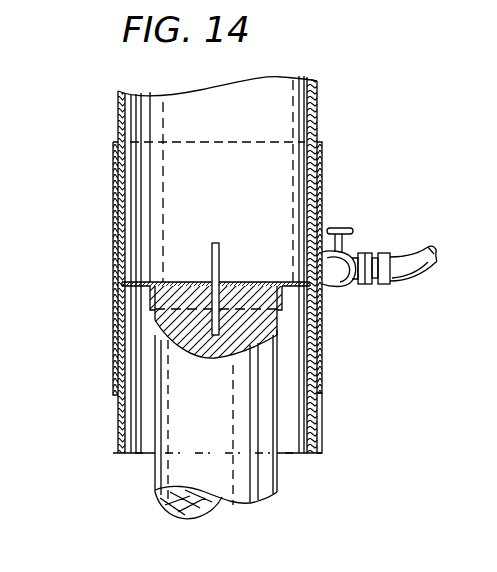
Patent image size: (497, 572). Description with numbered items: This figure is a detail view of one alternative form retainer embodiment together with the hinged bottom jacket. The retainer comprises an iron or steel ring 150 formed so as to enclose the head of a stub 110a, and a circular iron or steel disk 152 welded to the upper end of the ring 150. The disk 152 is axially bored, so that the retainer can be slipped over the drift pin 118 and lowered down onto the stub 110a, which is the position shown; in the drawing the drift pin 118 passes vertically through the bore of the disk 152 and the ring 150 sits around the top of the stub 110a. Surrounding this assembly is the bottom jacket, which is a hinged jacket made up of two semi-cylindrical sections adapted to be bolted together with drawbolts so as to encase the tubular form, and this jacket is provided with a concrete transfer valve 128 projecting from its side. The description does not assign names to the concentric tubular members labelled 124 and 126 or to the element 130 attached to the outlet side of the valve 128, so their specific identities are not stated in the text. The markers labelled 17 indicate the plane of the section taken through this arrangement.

The section line 17- 17 is at (75, 103).
The stub 110a is at (262, 489).
The drift pin 118 is at (212, 245).
The outer tube 124 is at (240, 264).
The sleeve 126 is at (322, 180).
The concrete transfer valve 128 is at (345, 262).
The hose 130 is at (415, 262).
The ring 150 is at (280, 300).
The disk 152 is at (256, 281).